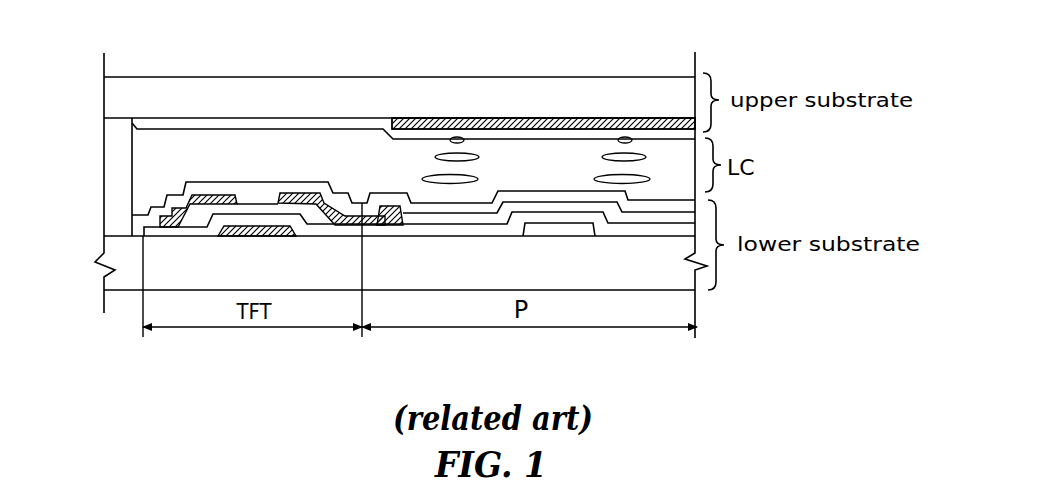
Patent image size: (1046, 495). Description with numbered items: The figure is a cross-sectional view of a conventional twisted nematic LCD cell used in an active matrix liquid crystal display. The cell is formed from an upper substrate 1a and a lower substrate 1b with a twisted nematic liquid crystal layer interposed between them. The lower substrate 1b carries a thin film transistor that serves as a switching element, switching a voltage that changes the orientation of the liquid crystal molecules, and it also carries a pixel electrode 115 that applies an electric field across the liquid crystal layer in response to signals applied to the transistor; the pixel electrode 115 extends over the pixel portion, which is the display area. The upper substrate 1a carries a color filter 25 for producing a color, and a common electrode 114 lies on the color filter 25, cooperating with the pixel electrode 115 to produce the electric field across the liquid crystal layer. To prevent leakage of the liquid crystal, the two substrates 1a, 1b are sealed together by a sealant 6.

The upper substrate 1a is at (339, 88).
The lower substrate 1b is at (122, 280).
The sealant 6 is at (110, 177).
The color filter 25 is at (577, 118).
The common electrode 114 is at (671, 129).
The pixel electrode 115 is at (690, 217).